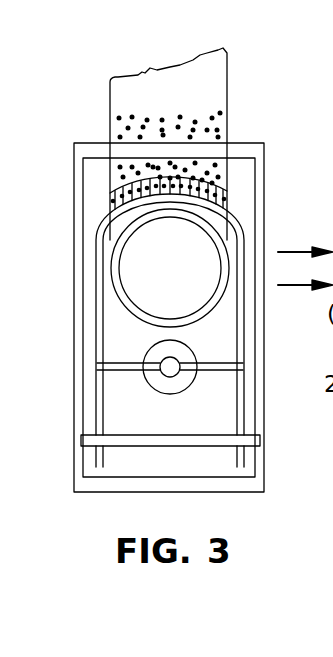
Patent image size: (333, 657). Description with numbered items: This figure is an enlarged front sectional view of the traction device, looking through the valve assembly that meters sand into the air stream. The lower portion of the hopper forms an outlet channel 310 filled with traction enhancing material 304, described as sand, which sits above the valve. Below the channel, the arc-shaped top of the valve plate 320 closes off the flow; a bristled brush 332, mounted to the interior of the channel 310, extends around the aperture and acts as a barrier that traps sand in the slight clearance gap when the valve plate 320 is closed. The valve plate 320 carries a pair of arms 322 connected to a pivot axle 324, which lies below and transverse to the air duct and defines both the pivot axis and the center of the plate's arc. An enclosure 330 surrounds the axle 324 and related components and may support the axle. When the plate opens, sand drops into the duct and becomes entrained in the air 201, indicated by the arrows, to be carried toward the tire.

The air 201 is at (288, 288).
The traction enhancing material 304 is at (175, 120).
The outlet channel 310 is at (228, 80).
The valve plate 320 is at (231, 231).
The arms 322 is at (104, 322).
The pivot axle 324 is at (171, 435).
The enclosure 330 is at (96, 143).
The bristled brush 332 is at (112, 200).